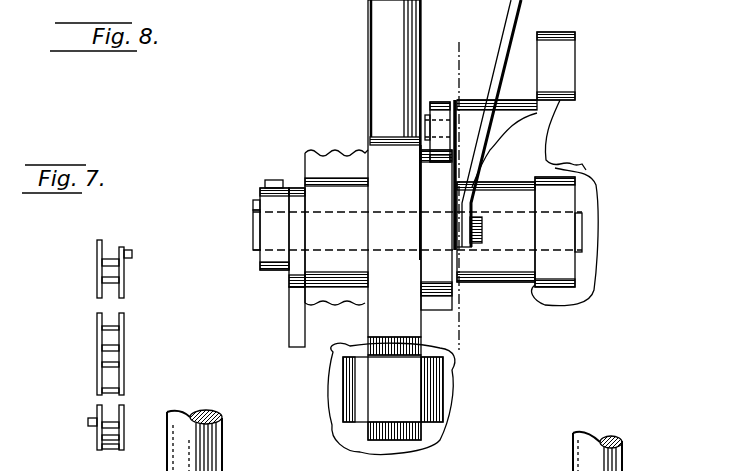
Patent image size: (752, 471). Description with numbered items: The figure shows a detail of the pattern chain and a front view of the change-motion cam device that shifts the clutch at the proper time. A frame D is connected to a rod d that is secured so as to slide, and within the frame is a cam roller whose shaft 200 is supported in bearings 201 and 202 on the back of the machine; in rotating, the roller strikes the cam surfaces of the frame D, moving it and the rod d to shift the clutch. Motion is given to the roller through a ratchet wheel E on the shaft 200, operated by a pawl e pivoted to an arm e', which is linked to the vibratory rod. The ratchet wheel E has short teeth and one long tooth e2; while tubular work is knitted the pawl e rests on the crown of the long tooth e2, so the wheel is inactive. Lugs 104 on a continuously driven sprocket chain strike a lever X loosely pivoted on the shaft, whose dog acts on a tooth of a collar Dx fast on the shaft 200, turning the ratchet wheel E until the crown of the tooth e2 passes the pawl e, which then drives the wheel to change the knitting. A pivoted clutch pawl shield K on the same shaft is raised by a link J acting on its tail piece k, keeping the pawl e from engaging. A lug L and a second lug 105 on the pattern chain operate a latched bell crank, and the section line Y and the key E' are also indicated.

In FIG. 8, the frame D is at (372, 145).
In FIG. 8, the ratchet wheel E is at (406, 180).
In FIG. 8, the key E' is at (274, 168).
In FIG. 8, the collar Dx is at (256, 201).
In FIG. 8, the shaft 200 is at (256, 237).
In FIG. 8, the bearing 201 is at (561, 285).
In FIG. 8, the bearing 202 is at (292, 284).
In FIG. 8, the lever X is at (290, 323).
In FIG. 8, the pawl e is at (437, 120).
In FIG. 8, the arm e' is at (531, 109).
In FIG. 8, the long tooth e2 is at (447, 212).
In FIG. 8, the clutch pawl shield K is at (453, 168).
In FIG. 8, the tail piece k is at (484, 219).
In FIG. 8, the link J is at (526, 24).
In FIG. 8, the section line Y is at (457, 198).
In FIG. 7, the lugs 104 is at (128, 254).
In FIG. 7, the lug L is at (124, 334).
In FIG. 7, the second lug 105 is at (88, 423).
In FIG. 7, the rod d is at (216, 470).